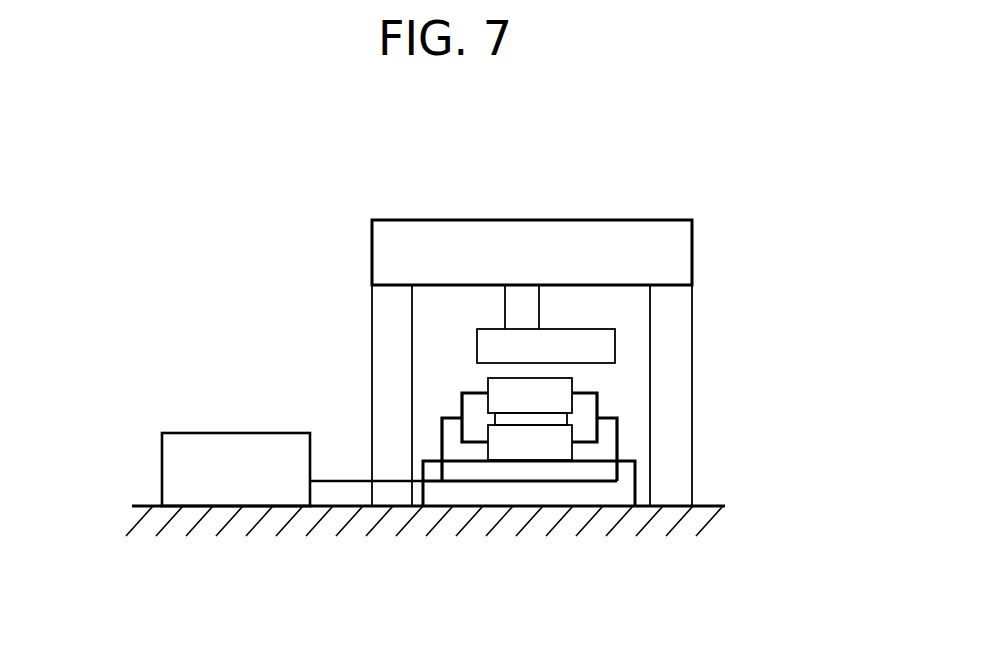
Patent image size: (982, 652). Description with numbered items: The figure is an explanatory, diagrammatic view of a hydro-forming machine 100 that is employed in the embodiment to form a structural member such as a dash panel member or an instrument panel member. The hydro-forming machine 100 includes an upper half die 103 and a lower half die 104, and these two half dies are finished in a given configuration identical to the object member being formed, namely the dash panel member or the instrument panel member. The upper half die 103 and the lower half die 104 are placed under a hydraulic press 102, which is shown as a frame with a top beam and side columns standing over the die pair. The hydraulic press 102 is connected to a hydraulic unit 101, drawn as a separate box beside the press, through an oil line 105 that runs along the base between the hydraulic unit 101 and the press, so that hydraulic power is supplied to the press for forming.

The hydro-forming machine 100 is at (728, 236).
The hydraulic unit 101 is at (162, 455).
The hydraulic press 102 is at (378, 219).
The upper half die 103 is at (572, 384).
The lower half die 104 is at (572, 453).
The oil line 105 is at (493, 483).